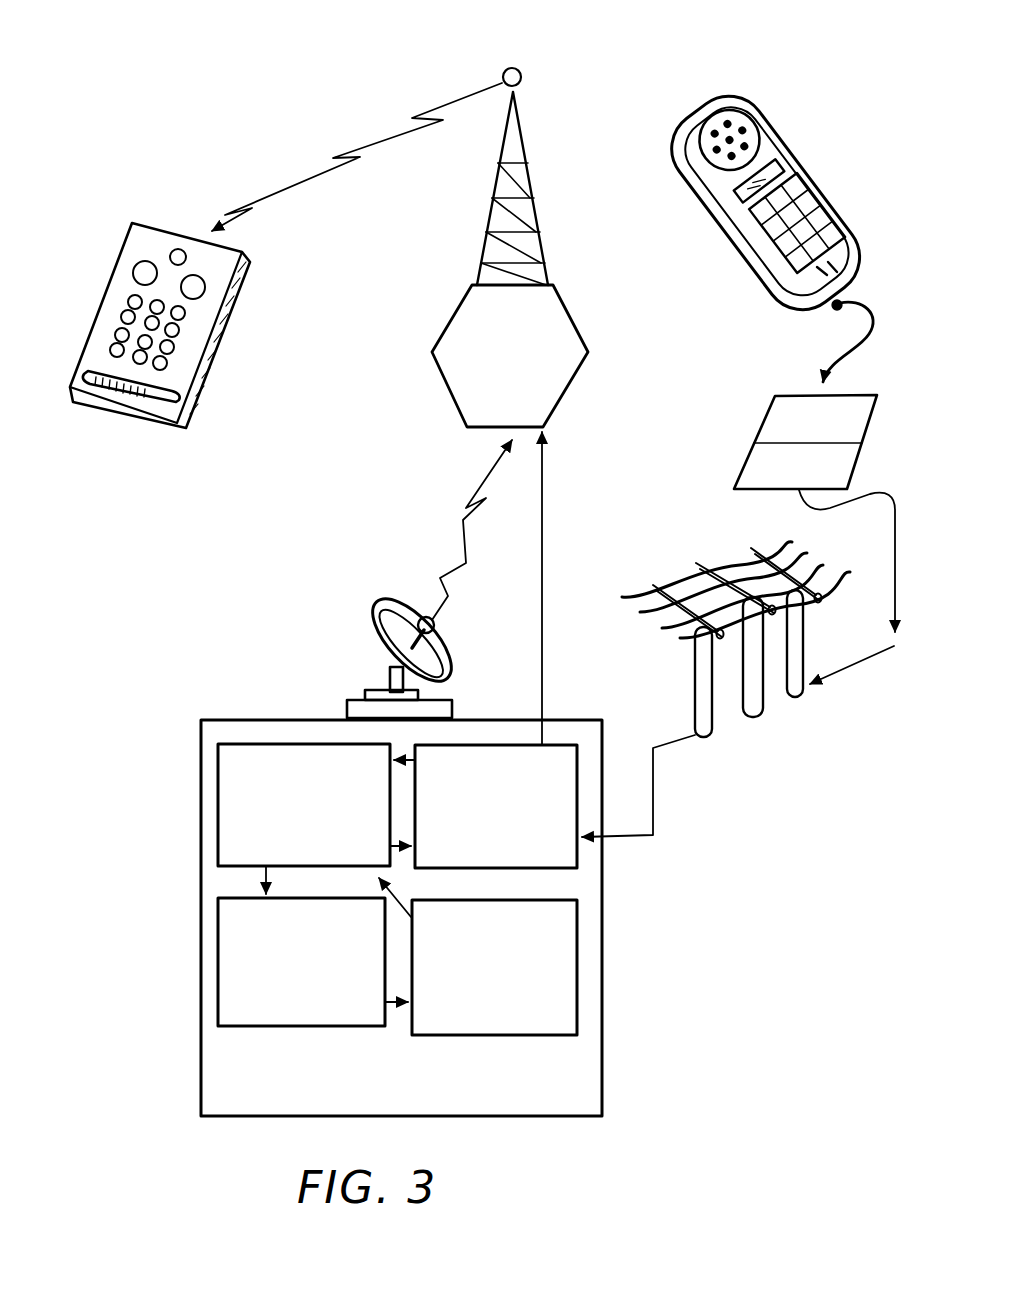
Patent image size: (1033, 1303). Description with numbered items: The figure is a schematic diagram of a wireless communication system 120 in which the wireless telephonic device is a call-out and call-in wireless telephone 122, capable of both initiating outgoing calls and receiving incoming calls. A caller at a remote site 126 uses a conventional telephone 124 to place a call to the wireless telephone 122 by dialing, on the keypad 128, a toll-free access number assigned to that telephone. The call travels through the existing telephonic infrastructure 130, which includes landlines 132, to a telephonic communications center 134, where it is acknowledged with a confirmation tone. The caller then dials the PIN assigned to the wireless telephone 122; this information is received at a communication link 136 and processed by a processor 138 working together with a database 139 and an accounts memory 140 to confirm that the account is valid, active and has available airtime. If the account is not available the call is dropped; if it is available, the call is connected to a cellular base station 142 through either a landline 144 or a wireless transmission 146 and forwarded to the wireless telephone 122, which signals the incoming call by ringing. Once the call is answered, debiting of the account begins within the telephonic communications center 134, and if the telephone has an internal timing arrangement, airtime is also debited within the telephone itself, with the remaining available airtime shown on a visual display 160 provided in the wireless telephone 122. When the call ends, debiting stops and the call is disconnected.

The wireless communication system 120 is at (286, 554).
The wireless telephone 122 is at (176, 428).
The conventional telephone 124 is at (792, 163).
The remote site 126 is at (882, 186).
The keypad 128 is at (785, 252).
The telephonic infrastructure 130 is at (575, 676).
The landlines 132 is at (686, 572).
The telephonic communications center 134 is at (201, 846).
The communication link 136 is at (485, 745).
The processor 138 is at (262, 744).
The database 139 is at (218, 987).
The accounts memory 140 is at (577, 995).
The cellular base station 142 is at (457, 405).
The landline 144 is at (546, 516).
The wireless transmission 146 is at (458, 533).
The visual display 160 is at (94, 386).